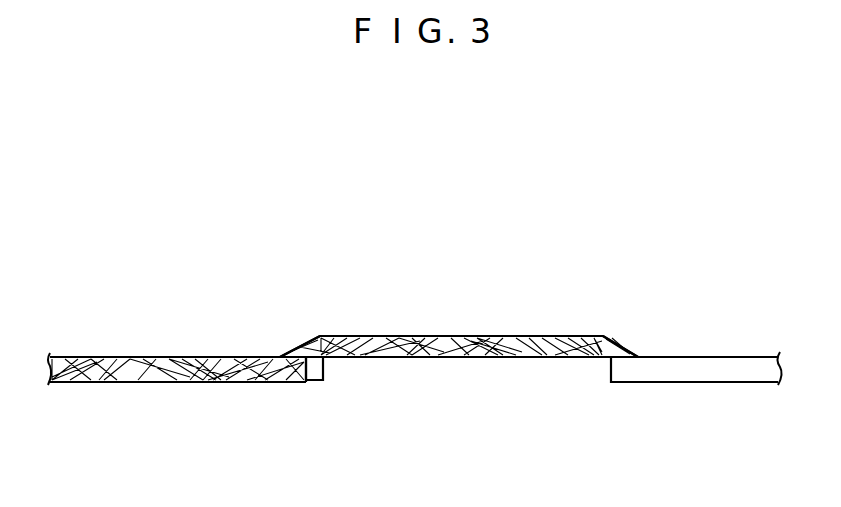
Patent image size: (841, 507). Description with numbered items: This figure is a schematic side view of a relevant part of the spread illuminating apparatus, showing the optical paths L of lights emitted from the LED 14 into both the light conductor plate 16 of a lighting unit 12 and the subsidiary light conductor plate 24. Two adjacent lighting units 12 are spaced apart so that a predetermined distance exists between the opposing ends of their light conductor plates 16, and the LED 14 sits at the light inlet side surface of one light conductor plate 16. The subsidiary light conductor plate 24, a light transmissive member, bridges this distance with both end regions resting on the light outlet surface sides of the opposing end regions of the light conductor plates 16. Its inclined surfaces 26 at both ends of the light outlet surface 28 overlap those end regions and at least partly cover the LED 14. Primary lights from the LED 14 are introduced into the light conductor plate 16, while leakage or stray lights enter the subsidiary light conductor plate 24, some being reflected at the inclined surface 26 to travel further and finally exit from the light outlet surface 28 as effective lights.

The lighting unit 12 is at (192, 316).
The LED 14 is at (317, 381).
The light conductor plate 16 is at (185, 383).
The subsidiary light conductor plate 24 is at (593, 206).
The inclined surface 26 is at (298, 350).
The light outlet surface 28 is at (501, 336).
The optical path L is at (432, 335).